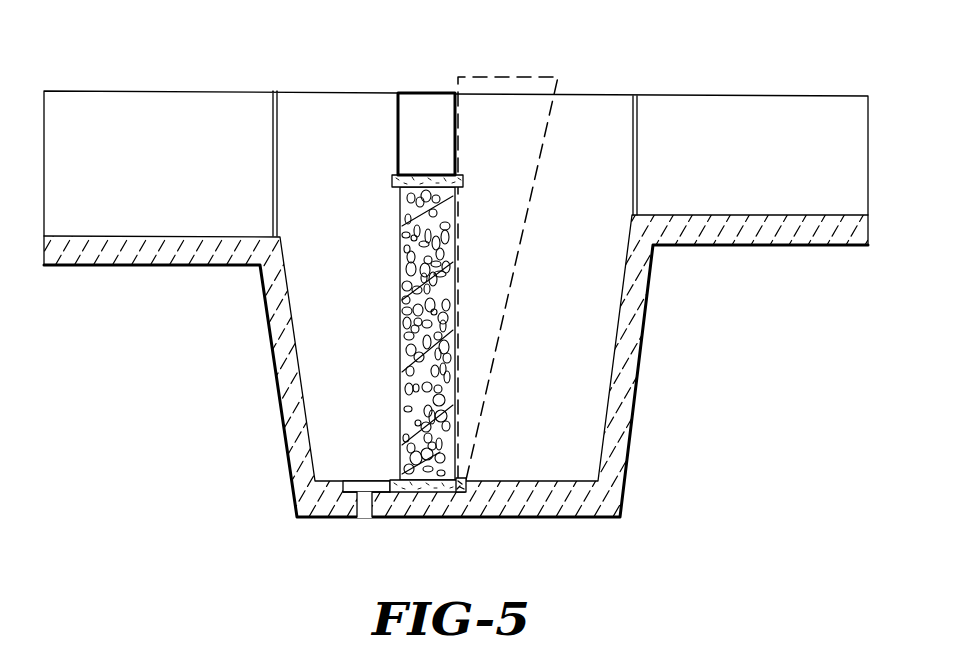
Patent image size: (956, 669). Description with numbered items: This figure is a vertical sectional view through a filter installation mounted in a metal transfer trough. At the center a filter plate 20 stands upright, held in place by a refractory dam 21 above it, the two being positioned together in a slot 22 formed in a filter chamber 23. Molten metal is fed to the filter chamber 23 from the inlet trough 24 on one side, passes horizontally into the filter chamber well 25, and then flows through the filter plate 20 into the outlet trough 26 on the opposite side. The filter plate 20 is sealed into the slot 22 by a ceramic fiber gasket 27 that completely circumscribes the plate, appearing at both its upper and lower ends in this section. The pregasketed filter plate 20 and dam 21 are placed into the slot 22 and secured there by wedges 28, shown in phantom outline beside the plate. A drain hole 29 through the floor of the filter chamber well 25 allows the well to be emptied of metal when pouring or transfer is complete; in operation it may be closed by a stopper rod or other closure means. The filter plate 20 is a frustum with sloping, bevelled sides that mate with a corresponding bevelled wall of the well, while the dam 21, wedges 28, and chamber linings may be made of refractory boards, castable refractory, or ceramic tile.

The filter plate 20 is at (400, 302).
The refractory dam 21 is at (436, 143).
The slot 22 is at (466, 479).
The filter chamber 23 is at (563, 368).
The inlet trough 24 is at (768, 168).
The filter chamber well 25 is at (607, 430).
The outlet trough 26 is at (165, 191).
The ceramic fiber gasket 27 is at (463, 182).
The wedges 28 is at (518, 75).
The drain hole 29 is at (347, 520).